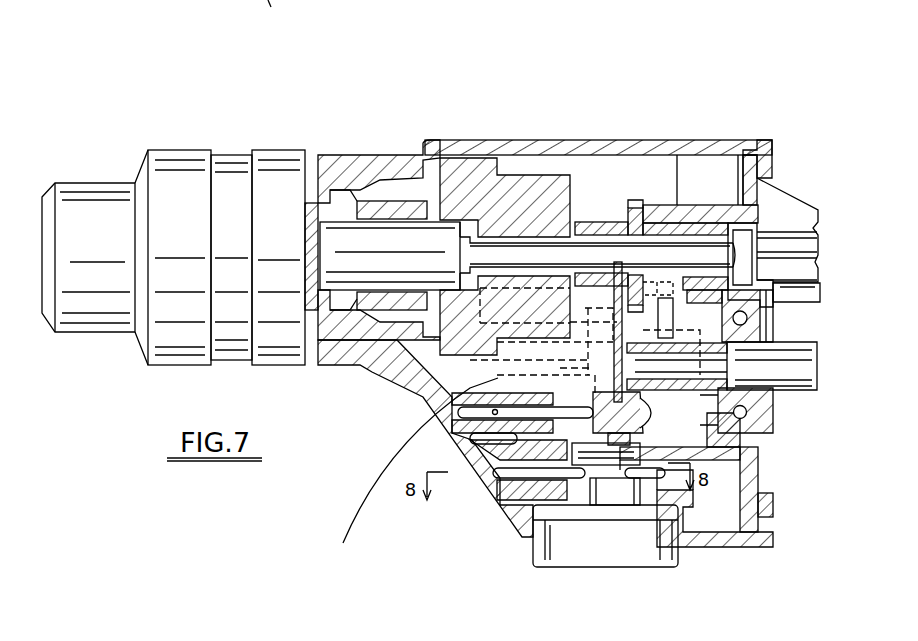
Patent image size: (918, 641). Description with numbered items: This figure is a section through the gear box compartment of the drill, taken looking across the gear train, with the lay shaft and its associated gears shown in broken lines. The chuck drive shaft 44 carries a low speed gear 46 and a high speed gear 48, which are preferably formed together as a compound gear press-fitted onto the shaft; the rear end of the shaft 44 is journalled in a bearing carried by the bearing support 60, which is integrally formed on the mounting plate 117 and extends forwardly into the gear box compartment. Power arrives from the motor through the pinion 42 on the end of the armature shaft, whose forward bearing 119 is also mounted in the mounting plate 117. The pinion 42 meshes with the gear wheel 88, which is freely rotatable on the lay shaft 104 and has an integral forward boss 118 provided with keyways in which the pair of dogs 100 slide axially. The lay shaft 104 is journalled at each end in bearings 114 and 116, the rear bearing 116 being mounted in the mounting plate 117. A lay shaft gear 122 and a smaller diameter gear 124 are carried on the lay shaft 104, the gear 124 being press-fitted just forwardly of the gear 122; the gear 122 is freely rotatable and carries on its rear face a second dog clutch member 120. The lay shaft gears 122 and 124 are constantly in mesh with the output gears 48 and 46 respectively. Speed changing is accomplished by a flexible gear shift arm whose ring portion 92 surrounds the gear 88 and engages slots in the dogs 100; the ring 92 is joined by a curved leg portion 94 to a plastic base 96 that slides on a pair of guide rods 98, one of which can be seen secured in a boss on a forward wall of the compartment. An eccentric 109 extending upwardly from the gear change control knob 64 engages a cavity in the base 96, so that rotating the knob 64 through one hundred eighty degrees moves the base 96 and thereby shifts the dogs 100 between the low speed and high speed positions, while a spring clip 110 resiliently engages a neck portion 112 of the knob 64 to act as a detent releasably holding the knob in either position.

The pinion 42 is at (690, 300).
The chuck drive shaft 44 is at (528, 262).
The low speed gear 46 is at (470, 156).
The high speed gear 48 is at (541, 158).
The bearing support 60 is at (682, 210).
The gear change control knob 64 is at (555, 545).
The gear wheel 88 is at (648, 205).
The ring portion 92 is at (598, 225).
The leg portion 94 is at (665, 512).
The base 96 is at (606, 432).
The guide rods 98 is at (408, 471).
The dogs 100 is at (712, 228).
The lay shaft 104 is at (776, 321).
The eccentric 109 is at (620, 440).
The spring clip 110 is at (450, 400).
The neck portion 112 is at (606, 435).
The bearing 114 is at (358, 380).
The rear bearing 116 is at (767, 225).
The mounting plate 117 is at (748, 180).
The forward boss 118 is at (612, 262).
The forward bearing 119 is at (745, 418).
The second dog clutch member 120 is at (540, 385).
The lay shaft gear 122 is at (455, 400).
The smaller diameter gear 124 is at (445, 380).